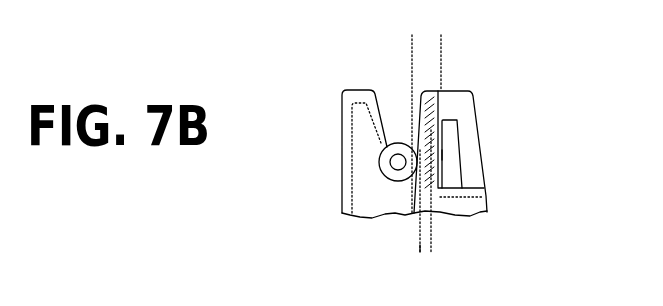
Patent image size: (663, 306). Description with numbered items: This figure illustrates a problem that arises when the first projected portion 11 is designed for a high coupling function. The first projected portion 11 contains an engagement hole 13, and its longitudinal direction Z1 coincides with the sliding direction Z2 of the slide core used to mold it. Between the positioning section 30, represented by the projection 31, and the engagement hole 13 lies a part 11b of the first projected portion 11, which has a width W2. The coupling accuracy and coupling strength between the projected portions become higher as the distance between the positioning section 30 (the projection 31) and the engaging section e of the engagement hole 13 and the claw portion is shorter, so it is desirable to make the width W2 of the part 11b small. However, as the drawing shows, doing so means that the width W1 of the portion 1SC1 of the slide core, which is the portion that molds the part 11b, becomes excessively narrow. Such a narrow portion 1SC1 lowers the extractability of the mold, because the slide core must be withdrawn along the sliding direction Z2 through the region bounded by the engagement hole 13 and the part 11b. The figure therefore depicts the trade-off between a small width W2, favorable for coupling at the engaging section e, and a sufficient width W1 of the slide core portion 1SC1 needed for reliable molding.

The first projected portion 11 is at (327, 103).
The part between the positioning section and the engagement hole 11b is at (435, 110).
The engagement hole 13 is at (456, 120).
The engaging section e is at (441, 152).
The positioning section 30 is at (341, 162).
The projection 31 is at (379, 162).
The width of the slide core portion W1 is at (407, 240).
The width of the part 11b W2 is at (440, 44).
The longitudinal direction of the engagement hole Z1 is at (512, 134).
The sliding direction of the slide core Z2 is at (370, 241).
The portion of the slide core 1SC1 is at (430, 252).